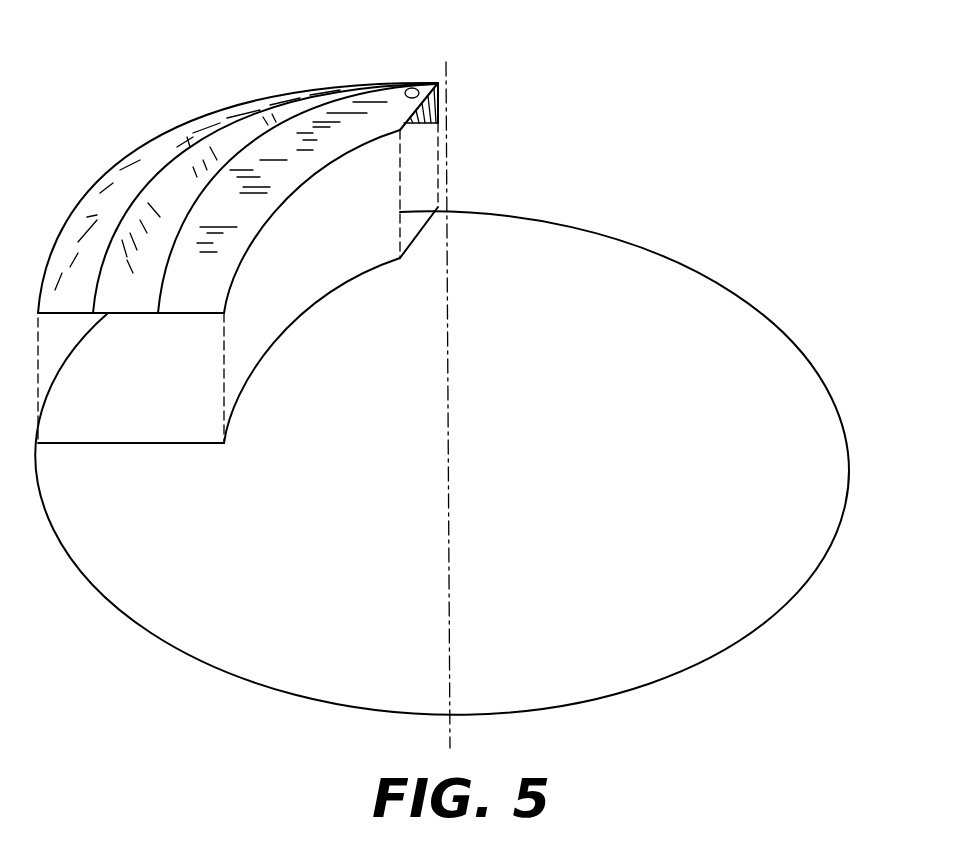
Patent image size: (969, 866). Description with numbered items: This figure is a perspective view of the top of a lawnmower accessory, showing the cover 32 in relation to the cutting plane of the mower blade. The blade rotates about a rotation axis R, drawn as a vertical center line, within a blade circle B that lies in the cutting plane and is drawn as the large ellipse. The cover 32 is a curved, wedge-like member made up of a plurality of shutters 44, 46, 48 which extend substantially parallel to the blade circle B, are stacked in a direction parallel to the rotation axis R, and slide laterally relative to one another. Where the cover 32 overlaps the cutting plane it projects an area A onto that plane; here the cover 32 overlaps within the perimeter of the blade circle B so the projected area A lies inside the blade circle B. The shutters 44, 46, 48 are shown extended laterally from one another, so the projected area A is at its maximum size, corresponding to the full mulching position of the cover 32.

The cover 32 is at (238, 221).
The shutter 44 is at (195, 292).
The shutter 46 is at (125, 292).
The shutter 48 is at (63, 293).
The projected area A is at (267, 323).
The blade circle B is at (707, 318).
The rotation axis R is at (450, 273).